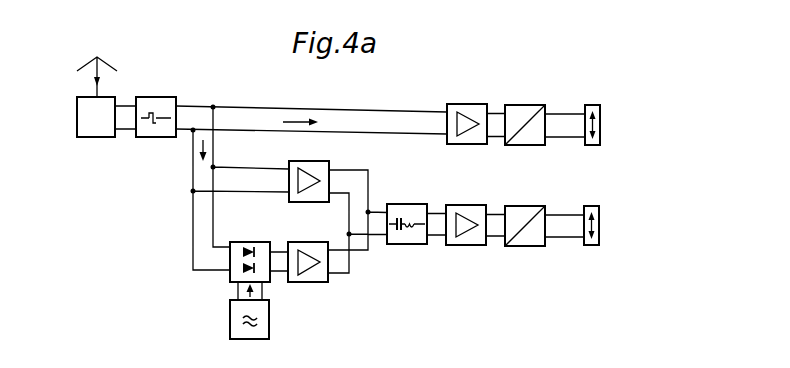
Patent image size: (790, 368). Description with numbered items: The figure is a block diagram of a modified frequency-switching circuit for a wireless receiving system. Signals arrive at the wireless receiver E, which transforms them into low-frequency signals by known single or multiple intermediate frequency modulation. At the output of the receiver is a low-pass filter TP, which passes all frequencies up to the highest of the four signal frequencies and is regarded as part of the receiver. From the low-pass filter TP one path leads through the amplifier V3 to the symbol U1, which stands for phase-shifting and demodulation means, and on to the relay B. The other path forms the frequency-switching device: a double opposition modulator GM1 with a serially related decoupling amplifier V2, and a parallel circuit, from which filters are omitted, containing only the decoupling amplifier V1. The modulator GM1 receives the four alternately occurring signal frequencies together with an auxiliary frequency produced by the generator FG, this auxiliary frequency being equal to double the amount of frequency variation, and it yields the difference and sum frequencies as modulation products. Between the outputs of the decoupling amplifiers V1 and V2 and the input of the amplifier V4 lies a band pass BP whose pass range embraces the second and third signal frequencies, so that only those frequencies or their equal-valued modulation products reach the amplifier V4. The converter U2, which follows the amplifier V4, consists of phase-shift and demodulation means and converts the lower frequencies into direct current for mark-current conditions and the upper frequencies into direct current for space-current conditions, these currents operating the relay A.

The wireless receiver E is at (97, 97).
The low-pass filter TP is at (155, 115).
The decoupling amplifier V1 is at (309, 171).
The decoupling amplifier V2 is at (308, 251).
The amplifier V3 is at (467, 115).
The amplifier V4 is at (466, 214).
The converter U1 is at (525, 115).
The converter U2 is at (525, 215).
The double opposition modulator GM1 is at (250, 250).
The generator FG is at (256, 330).
The band pass BP is at (406, 222).
The relay A is at (600, 225).
The relay B is at (600, 125).